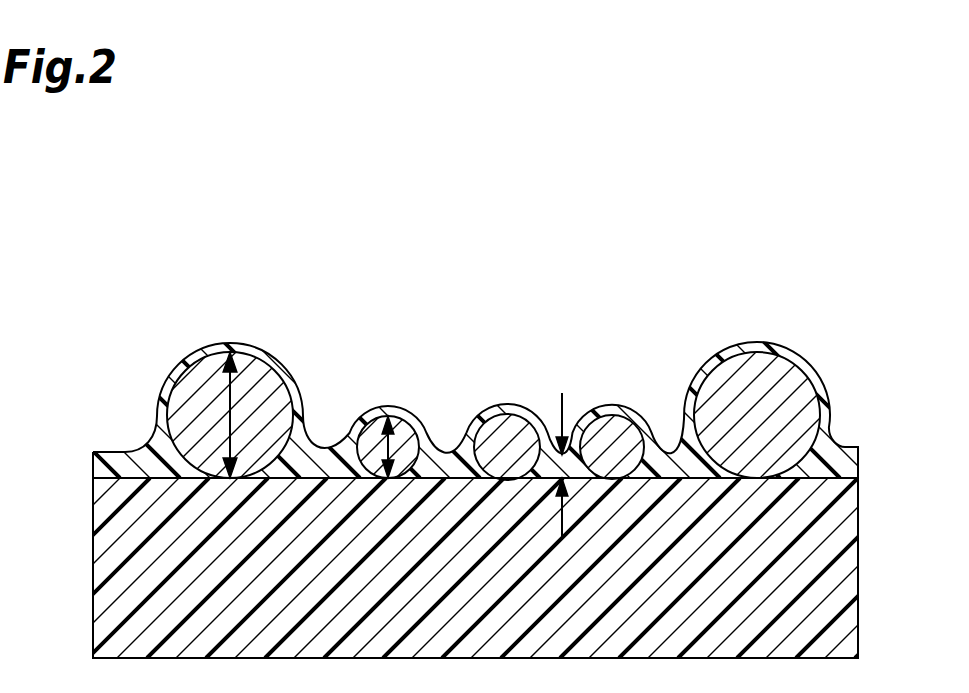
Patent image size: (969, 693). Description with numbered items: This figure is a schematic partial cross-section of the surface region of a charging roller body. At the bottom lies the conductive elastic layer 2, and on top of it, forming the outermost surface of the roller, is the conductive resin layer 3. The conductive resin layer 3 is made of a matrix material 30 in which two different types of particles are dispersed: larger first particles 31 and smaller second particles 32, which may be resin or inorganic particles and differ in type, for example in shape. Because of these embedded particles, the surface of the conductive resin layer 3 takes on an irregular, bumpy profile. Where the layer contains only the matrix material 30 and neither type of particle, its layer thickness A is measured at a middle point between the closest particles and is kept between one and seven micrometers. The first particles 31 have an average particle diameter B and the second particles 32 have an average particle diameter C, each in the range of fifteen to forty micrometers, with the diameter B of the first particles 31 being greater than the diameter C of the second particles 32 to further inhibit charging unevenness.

The conductive elastic layer 2 is at (845, 583).
The conductive resin layer 3 is at (484, 405).
The matrix material 30 is at (143, 458).
The first particles 31 is at (272, 393).
The second particles 32 is at (374, 435).
The layer thickness A is at (561, 447).
The particle diameter of first particles B is at (237, 352).
The particle diameter of second particles C is at (412, 420).